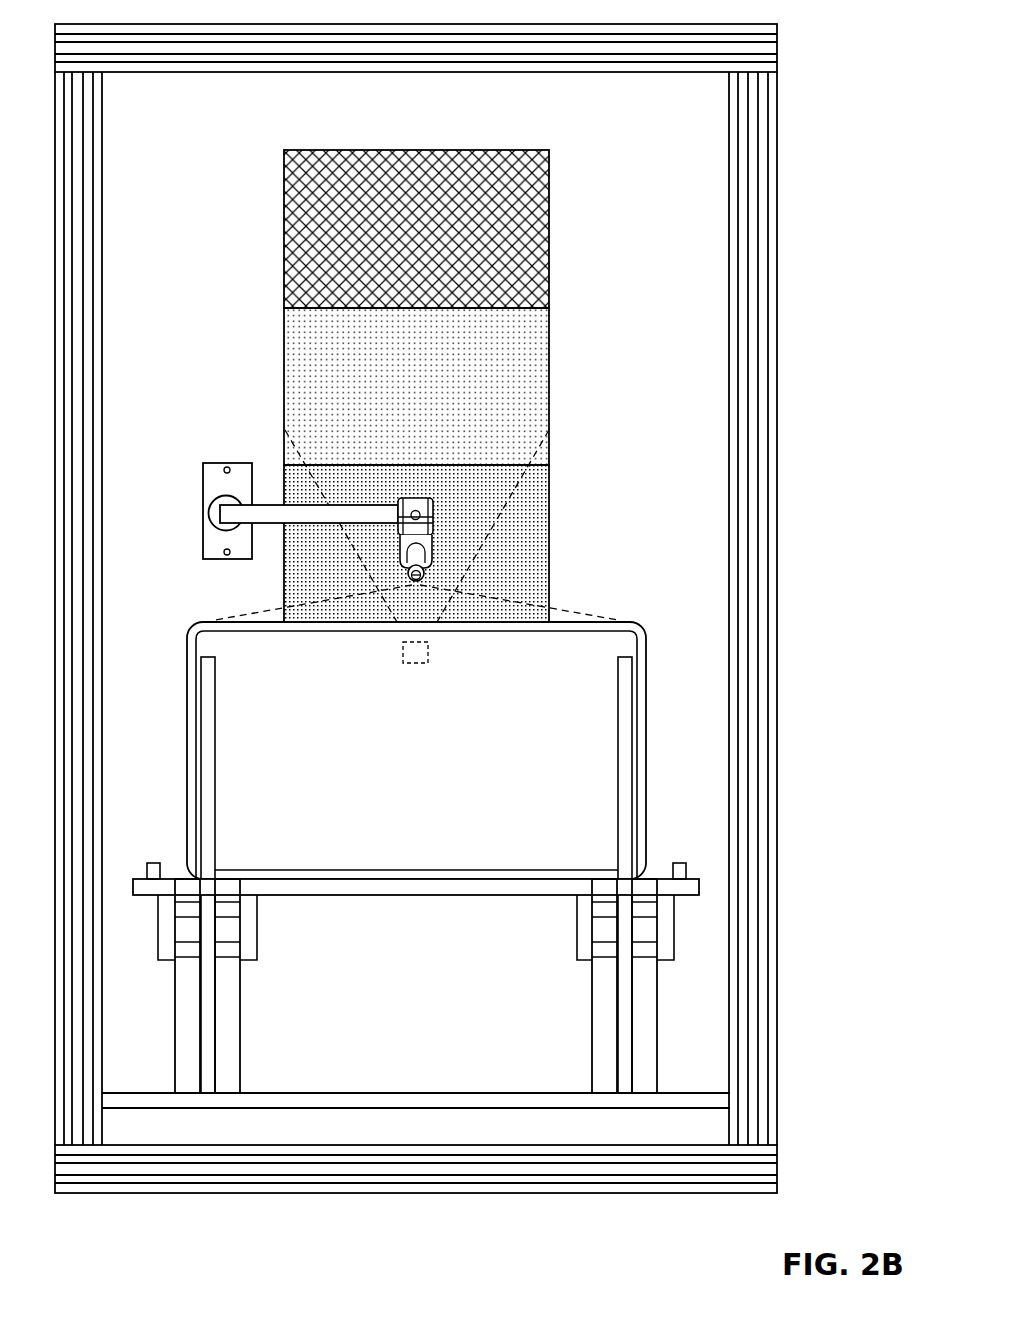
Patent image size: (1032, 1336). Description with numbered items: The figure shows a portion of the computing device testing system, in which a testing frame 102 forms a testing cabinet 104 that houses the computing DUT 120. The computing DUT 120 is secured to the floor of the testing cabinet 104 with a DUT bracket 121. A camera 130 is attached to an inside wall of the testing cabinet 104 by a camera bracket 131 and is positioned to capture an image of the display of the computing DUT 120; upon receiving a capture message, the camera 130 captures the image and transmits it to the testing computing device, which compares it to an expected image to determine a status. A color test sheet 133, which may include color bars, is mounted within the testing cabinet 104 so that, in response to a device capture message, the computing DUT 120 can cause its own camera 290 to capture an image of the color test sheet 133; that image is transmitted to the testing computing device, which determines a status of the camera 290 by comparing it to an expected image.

The testing frame 102 is at (542, 24).
The testing cabinet 104 is at (713, 263).
The color test sheet 133 is at (527, 193).
The camera bracket 131 is at (305, 508).
The camera 130 is at (418, 502).
The computing DUT 120 is at (598, 647).
The DUT bracket 121 is at (607, 987).
The camera 290 is at (419, 662).